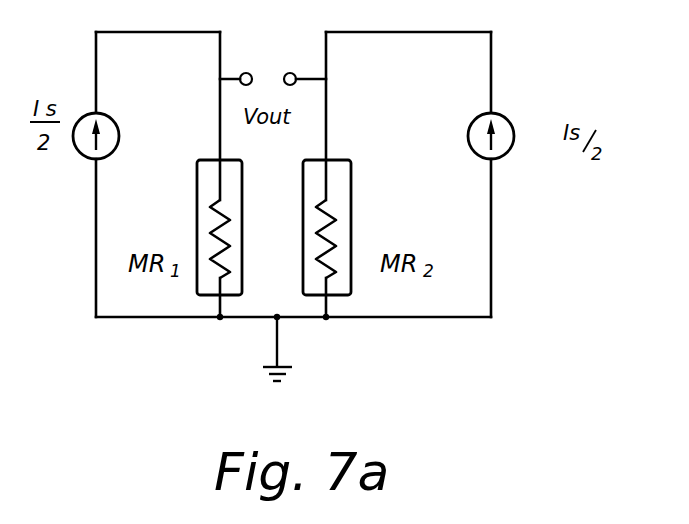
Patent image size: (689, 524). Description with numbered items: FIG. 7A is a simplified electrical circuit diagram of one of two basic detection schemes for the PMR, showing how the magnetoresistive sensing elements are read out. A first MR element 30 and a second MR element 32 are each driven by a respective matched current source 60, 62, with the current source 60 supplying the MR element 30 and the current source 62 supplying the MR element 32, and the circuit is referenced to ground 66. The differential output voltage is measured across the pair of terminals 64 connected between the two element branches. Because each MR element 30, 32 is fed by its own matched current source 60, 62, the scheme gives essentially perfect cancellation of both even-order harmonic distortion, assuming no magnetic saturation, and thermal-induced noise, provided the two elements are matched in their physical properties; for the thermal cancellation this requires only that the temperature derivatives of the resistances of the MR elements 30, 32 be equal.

The MR element 30 is at (351, 197).
The MR element 32 is at (197, 186).
The current source 60 is at (514, 138).
The current source 62 is at (88, 158).
The terminals 64 is at (266, 72).
The ground 66 is at (280, 352).